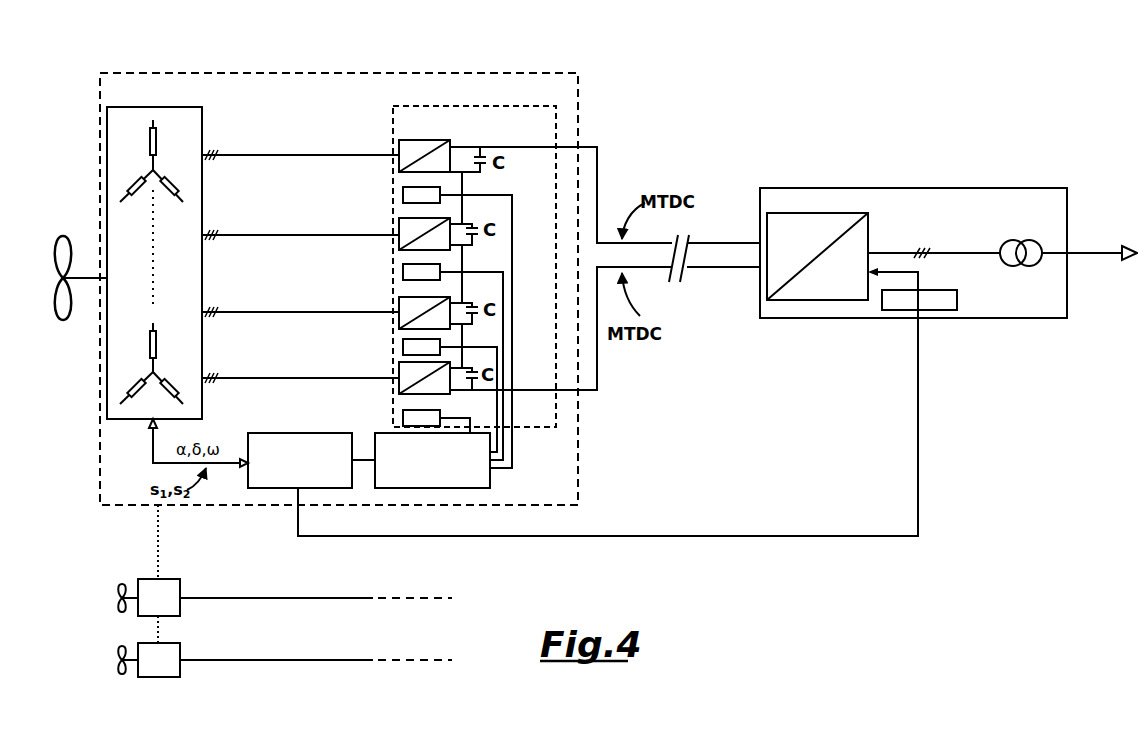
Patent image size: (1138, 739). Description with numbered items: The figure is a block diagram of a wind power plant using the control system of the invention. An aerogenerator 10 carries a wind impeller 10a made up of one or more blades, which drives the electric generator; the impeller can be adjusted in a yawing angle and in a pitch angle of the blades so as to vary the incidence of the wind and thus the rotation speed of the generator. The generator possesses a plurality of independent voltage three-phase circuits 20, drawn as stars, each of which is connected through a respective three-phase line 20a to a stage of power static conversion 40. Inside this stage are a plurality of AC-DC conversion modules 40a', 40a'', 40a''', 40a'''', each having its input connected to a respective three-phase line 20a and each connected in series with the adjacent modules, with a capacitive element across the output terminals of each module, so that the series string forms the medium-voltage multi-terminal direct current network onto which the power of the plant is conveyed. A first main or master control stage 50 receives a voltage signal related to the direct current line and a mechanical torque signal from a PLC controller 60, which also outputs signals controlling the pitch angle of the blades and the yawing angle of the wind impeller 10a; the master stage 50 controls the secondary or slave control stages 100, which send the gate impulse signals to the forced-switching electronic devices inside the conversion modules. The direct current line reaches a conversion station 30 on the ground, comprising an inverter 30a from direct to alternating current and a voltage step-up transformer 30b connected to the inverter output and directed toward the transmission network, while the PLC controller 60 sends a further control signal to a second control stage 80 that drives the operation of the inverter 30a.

The aerogenerator 10 is at (489, 70).
The wind impeller 10a is at (65, 228).
The independent voltage three-phase circuit 20 is at (155, 169).
The three-phase line 20a is at (245, 151).
The stage of power static conversion 40 is at (393, 103).
The AC-DC conversion module 40a' is at (441, 143).
The AC-DC conversion module 40a'' is at (388, 248).
The AC-DC conversion module 40a''' is at (387, 320).
The AC-DC conversion module 40a'''' is at (381, 387).
The secondary control stage 100 is at (402, 195).
The PLC controller 60 is at (322, 478).
The first main control stage 50 is at (437, 483).
The conversion station 30 is at (870, 184).
The inverter 30a is at (808, 300).
The voltage step-up transformer 30b is at (1019, 224).
The second control stage 80 is at (957, 291).